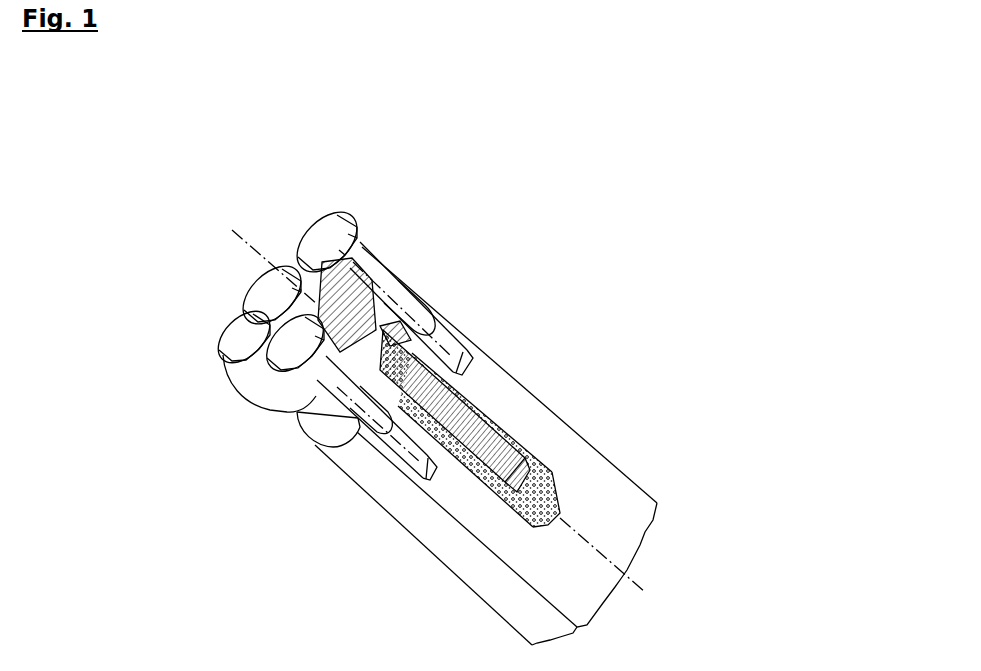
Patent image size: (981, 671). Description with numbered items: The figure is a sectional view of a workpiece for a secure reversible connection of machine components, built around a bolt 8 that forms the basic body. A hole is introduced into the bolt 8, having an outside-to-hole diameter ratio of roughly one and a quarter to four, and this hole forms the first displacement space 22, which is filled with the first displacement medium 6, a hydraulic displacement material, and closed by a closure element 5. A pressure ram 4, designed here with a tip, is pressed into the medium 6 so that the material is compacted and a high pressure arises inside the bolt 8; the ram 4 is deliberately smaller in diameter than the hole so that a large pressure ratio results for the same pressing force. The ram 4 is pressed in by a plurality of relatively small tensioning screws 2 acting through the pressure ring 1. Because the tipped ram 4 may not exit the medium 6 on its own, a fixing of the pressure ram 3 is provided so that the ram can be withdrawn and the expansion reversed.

The pressure ring 1 is at (292, 390).
The tensioning screw 2 is at (272, 283).
The fixing of pressure ram 3 is at (325, 285).
The pressure ram 4 is at (432, 383).
The closure element 5 is at (400, 340).
The first displacement medium 6 is at (505, 433).
The bolt 8 is at (587, 478).
The first displacement space 22 is at (495, 492).